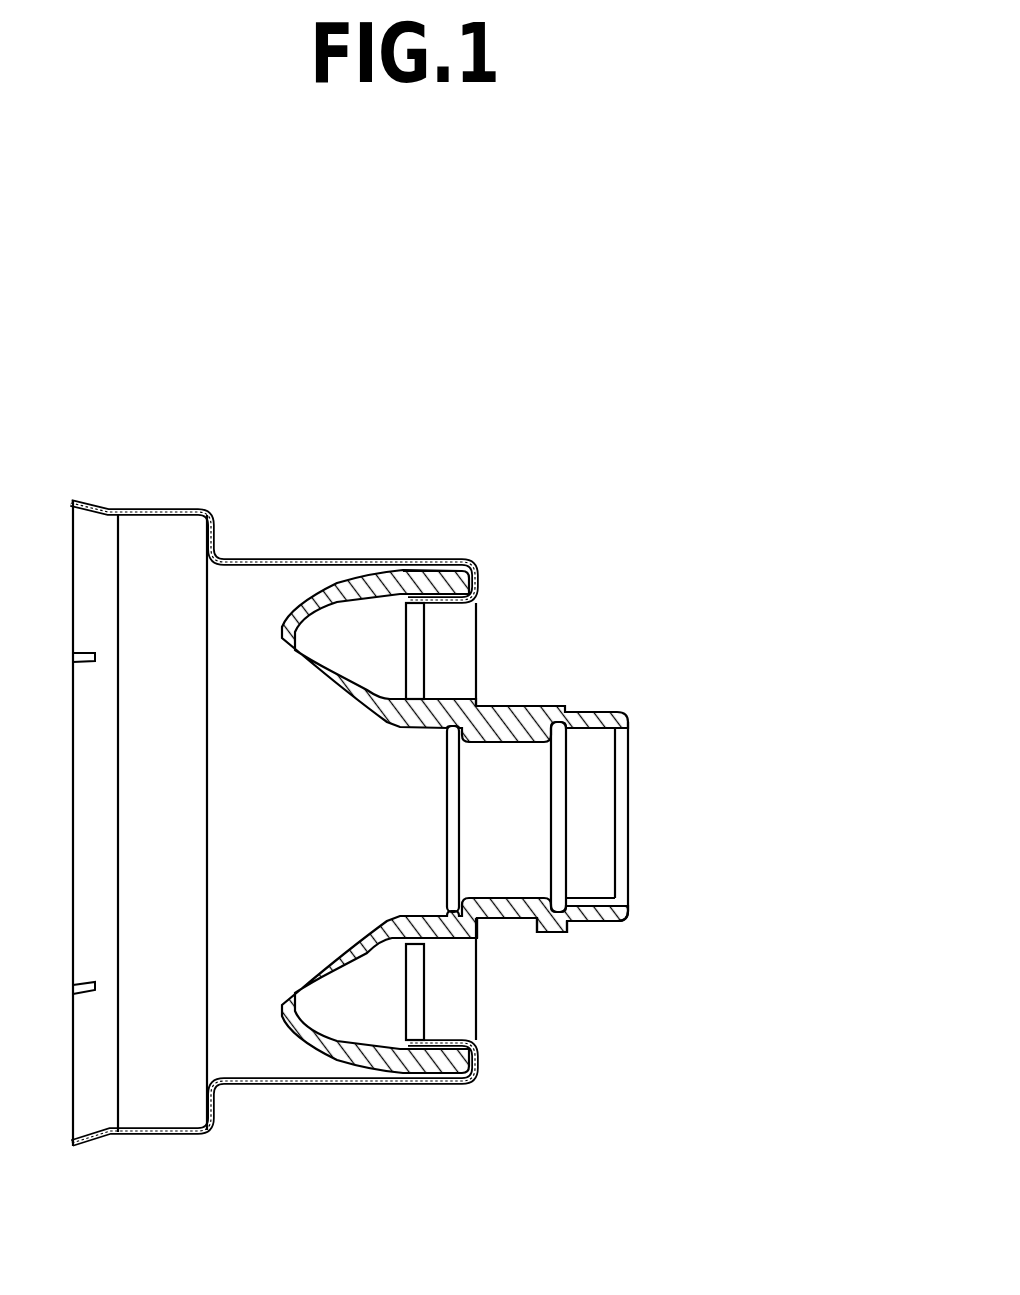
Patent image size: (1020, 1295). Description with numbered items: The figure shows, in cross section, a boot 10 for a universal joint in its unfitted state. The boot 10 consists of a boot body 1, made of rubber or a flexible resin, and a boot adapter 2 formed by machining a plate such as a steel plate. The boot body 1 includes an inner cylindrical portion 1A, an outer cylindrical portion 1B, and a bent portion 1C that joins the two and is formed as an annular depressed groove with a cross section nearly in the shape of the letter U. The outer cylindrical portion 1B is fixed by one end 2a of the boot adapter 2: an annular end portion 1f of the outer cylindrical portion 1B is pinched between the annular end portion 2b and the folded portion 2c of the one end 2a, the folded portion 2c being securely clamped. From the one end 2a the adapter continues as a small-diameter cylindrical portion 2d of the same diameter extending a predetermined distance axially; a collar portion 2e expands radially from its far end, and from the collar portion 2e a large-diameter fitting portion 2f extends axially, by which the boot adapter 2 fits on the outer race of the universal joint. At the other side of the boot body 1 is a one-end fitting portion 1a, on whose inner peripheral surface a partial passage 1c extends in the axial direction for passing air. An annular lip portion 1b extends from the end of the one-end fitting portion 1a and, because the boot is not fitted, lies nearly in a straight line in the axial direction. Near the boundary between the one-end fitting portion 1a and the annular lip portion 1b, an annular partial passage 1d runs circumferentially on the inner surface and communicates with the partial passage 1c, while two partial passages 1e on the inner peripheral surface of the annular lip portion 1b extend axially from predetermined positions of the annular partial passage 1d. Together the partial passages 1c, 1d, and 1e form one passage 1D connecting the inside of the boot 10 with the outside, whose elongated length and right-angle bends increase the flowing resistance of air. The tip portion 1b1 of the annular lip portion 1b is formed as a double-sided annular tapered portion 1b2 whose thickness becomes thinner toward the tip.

The boot for a universal joint 10 is at (446, 412).
The boot body 1 is at (466, 686).
The inner cylindrical portion 1A is at (536, 697).
The outer cylindrical portion 1B is at (458, 560).
The bent portion 1C is at (359, 670).
The passage 1D is at (592, 704).
The one-end fitting portion 1a is at (512, 918).
The annular lip portion 1b is at (590, 925).
The tip portion 1b1 is at (618, 924).
The annular tapered portion 1b2 is at (625, 906).
The partial passage 1c is at (503, 743).
The annular partial passage 1d is at (558, 800).
The partial passage 1e is at (575, 898).
The annular end portion 1f is at (422, 568).
The boot adapter 2 is at (295, 535).
The one end 2a is at (480, 562).
The annular end portion 2b is at (480, 583).
The folded portion 2c is at (479, 606).
The small-diameter cylindrical portion 2d is at (330, 560).
The collar portion 2e is at (213, 537).
The fitting portion 2f is at (158, 508).